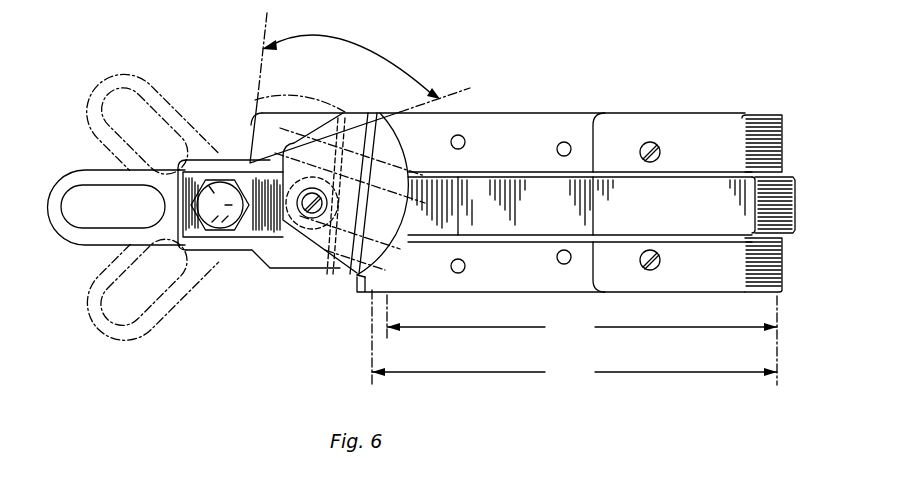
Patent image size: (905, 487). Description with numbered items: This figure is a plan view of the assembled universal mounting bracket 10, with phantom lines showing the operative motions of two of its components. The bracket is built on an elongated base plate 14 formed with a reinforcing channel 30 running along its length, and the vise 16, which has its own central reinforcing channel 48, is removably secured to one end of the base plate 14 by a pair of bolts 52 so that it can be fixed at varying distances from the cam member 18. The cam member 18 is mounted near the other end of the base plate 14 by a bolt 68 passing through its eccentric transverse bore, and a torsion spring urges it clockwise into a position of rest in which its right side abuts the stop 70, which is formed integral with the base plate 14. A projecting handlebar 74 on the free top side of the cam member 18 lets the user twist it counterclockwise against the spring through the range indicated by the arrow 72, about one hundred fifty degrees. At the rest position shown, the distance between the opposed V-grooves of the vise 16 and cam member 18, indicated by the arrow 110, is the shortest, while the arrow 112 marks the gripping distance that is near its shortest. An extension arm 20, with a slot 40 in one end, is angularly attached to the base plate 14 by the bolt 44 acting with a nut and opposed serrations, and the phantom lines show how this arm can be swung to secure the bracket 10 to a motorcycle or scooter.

The universal mounting bracket 10 is at (278, 345).
The base plate 14 is at (513, 278).
The vise 16 is at (703, 158).
The cam member 18 is at (407, 163).
The extension arm 20 is at (86, 244).
The reinforcing channel 30 is at (552, 221).
The slot 40 is at (97, 198).
The bolt 44 is at (233, 247).
The central reinforcing channel 48 is at (675, 225).
The bolts 52 is at (642, 158).
The bolt 68 is at (299, 217).
The stop 70 is at (356, 283).
The arrow 72 is at (354, 42).
The handlebar 74 is at (361, 123).
The arrow 110 is at (582, 317).
The arrow 112 is at (574, 337).